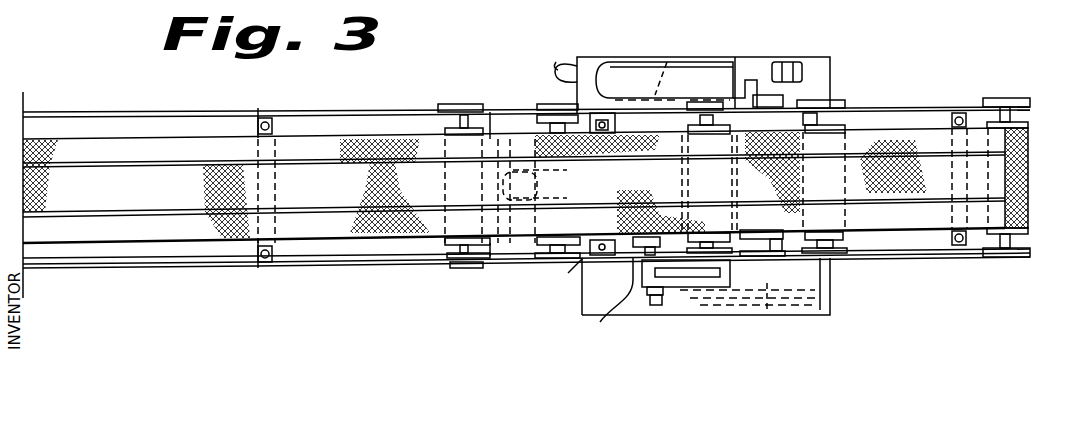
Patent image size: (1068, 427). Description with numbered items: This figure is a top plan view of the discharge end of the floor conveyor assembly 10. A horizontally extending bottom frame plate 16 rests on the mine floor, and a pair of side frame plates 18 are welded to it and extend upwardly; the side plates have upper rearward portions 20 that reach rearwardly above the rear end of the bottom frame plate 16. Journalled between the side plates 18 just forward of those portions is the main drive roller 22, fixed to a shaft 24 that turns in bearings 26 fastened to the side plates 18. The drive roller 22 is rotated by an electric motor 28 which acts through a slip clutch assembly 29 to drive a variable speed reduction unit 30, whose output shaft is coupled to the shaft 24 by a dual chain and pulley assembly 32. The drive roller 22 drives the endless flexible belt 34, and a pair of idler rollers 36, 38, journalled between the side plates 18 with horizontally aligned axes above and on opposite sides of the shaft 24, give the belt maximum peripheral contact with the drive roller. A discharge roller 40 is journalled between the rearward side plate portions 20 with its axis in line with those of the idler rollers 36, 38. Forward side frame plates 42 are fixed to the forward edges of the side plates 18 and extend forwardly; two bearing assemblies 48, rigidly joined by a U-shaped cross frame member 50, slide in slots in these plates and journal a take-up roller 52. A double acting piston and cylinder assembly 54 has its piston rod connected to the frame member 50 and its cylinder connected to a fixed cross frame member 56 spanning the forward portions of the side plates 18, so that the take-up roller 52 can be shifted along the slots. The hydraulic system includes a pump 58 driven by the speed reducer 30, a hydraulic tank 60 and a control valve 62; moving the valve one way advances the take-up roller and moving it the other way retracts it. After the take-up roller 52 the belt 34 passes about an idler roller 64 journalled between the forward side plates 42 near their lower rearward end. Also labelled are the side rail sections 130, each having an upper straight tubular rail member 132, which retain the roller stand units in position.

The floor conveyor assembly 10 is at (582, 25).
The bottom frame plate 16 is at (798, 62).
The side frame plates 18 is at (730, 93).
The upper rearward portions 20 is at (913, 268).
The main drive roller 22 is at (780, 145).
The shaft 24 is at (828, 282).
The bearings 26 is at (783, 100).
The electric motor 28 is at (670, 50).
The slip clutch assembly 29 is at (583, 258).
The variable speed reduction unit 30 is at (683, 283).
The dual chain and pulley assembly 32 is at (765, 312).
The endless flexible belt 34 is at (347, 138).
The idler roller 36 is at (715, 190).
The idler roller 38 is at (840, 197).
The discharge roller 40 is at (1027, 122).
The forward side frame plates 42 is at (322, 278).
The bearing assemblies 48 is at (480, 104).
The U-shaped cross frame member 50 is at (505, 125).
The take-up roller 52 is at (508, 133).
The double acting piston and cylinder assembly 54 is at (492, 256).
The fixed cross frame member 56 is at (607, 128).
The pump 58 is at (653, 307).
The hydraulic tank 60 is at (582, 290).
The control valve 62 is at (758, 70).
The idler roller 64 is at (620, 163).
The side rail sections 130 is at (156, 110).
The upper straight tubular rail member 132 is at (118, 268).